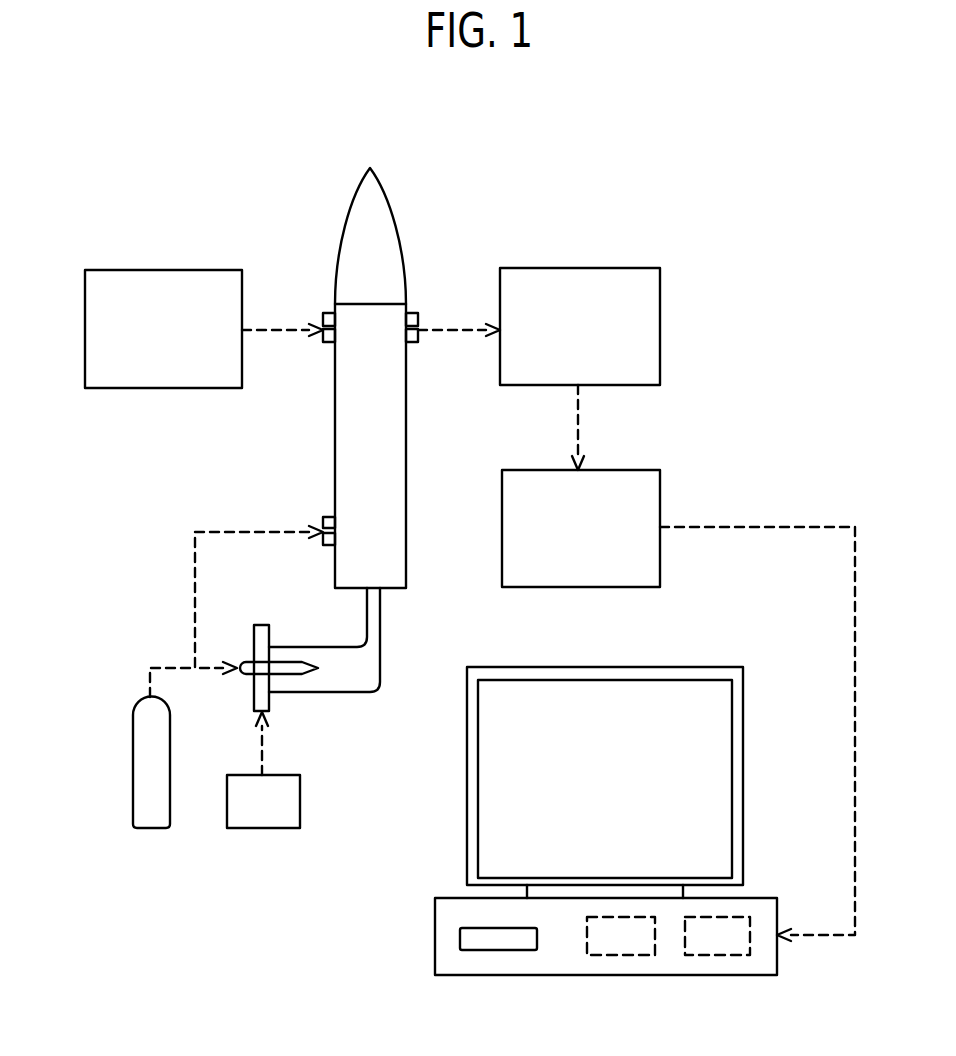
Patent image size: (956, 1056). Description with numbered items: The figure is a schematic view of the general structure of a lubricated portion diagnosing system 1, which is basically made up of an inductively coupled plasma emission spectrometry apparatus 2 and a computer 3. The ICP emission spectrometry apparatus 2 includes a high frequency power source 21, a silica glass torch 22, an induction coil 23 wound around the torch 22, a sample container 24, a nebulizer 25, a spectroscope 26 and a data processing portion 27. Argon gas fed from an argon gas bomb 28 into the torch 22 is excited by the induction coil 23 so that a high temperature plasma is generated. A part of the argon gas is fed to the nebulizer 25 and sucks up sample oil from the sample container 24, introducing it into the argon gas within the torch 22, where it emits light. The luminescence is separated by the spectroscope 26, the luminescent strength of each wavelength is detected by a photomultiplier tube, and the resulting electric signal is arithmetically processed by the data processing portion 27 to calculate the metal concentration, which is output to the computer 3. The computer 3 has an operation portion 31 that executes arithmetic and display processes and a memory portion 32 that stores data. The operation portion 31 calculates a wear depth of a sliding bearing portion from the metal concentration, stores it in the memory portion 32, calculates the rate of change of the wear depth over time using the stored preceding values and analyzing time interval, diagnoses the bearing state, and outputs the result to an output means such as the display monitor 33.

The lubricated portion diagnosing system 1 is at (728, 395).
The inductively coupled plasma emission spectrometry apparatus 2 is at (468, 238).
The computer 3 is at (393, 962).
The high frequency power source 21 is at (185, 345).
The silica glass torch 22 is at (335, 381).
The induction coil 23 is at (322, 314).
The sample container 24 is at (240, 828).
The nebulizer 25 is at (297, 692).
The spectroscope 26 is at (600, 345).
The data processing portion 27 is at (600, 542).
The argon gas bomb 28 is at (133, 752).
The operation portion 31 is at (621, 955).
The memory portion 32 is at (722, 955).
The display monitor 33 is at (467, 792).